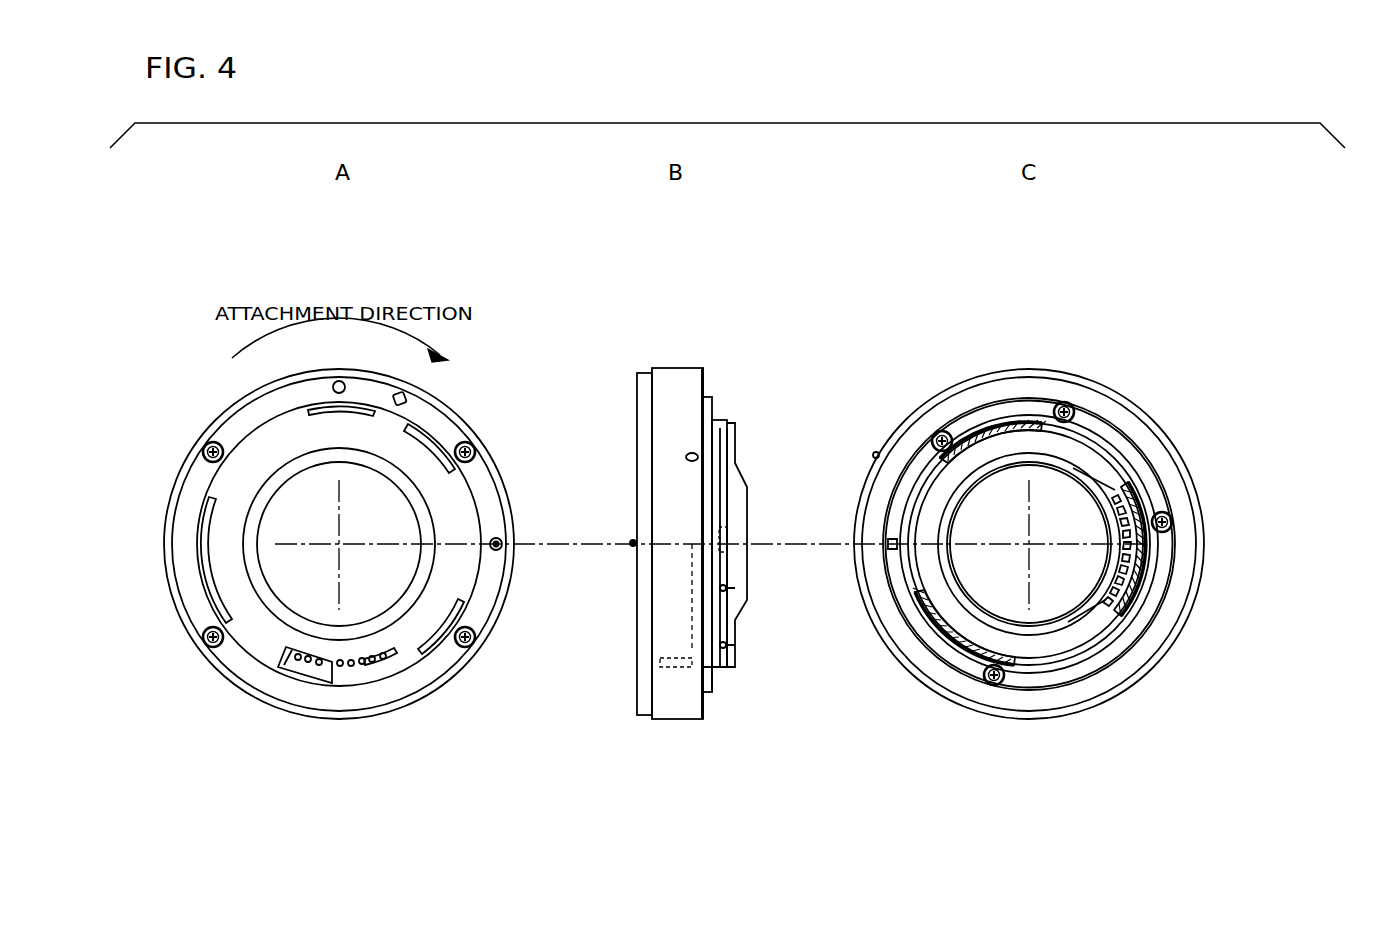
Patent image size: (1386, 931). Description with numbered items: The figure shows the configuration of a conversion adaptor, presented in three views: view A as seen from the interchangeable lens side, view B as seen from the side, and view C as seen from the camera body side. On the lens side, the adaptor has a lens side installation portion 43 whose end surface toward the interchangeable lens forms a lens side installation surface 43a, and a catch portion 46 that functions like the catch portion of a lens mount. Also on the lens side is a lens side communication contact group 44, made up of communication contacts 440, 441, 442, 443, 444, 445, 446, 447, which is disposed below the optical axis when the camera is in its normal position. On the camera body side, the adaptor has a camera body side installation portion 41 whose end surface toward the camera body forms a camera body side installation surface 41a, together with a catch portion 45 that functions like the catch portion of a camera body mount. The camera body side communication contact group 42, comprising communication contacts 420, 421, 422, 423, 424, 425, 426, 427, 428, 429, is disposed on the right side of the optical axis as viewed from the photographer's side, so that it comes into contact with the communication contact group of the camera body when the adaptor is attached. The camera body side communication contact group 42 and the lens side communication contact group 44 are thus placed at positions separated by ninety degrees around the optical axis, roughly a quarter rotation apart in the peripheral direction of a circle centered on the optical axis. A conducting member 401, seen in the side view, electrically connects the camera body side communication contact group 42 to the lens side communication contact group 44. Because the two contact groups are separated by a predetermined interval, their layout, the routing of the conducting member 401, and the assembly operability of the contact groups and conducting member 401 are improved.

The camera body side installation portion 41 is at (1033, 683).
The camera body side installation surface 41a is at (712, 407).
The camera body side communication contact group 42 is at (1033, 550).
The communication contact 420 is at (1118, 496).
The communication contact 421 is at (1123, 507).
The communication contact 422 is at (1126, 519).
The communication contact 423 is at (1129, 531).
The communication contact 424 is at (1130, 545).
The communication contact 425 is at (1129, 557).
The communication contact 426 is at (1127, 568).
The communication contact 427 is at (1123, 580).
The communication contact 428 is at (1118, 592).
The communication contact 429 is at (1185, 679).
The lens side installation portion 43 is at (227, 432).
The lens side installation surface 43a is at (637, 408).
The lens side communication contact group 44 is at (425, 702).
The communication contact 440 is at (298, 660).
The communication contact 441 is at (308, 662).
The communication contact 442 is at (319, 665).
The communication contact 443 is at (340, 666).
The communication contact 444 is at (351, 666).
The communication contact 445 is at (362, 664).
The communication contact 446 is at (372, 662).
The communication contact 447 is at (445, 709).
The catch portion 45 is at (1013, 425).
The catch portion 46 is at (425, 422).
The conducting member 401 is at (707, 667).